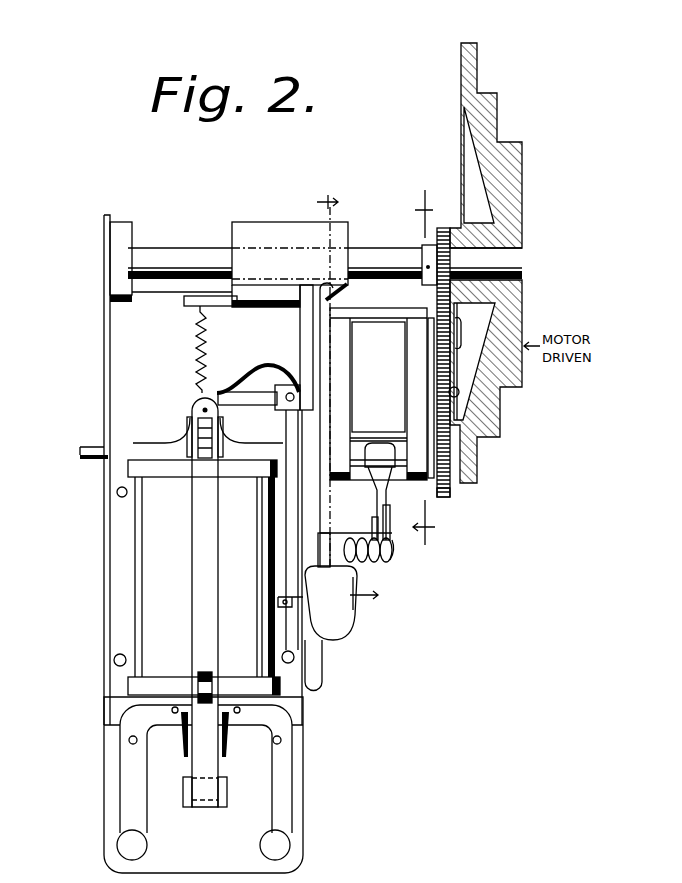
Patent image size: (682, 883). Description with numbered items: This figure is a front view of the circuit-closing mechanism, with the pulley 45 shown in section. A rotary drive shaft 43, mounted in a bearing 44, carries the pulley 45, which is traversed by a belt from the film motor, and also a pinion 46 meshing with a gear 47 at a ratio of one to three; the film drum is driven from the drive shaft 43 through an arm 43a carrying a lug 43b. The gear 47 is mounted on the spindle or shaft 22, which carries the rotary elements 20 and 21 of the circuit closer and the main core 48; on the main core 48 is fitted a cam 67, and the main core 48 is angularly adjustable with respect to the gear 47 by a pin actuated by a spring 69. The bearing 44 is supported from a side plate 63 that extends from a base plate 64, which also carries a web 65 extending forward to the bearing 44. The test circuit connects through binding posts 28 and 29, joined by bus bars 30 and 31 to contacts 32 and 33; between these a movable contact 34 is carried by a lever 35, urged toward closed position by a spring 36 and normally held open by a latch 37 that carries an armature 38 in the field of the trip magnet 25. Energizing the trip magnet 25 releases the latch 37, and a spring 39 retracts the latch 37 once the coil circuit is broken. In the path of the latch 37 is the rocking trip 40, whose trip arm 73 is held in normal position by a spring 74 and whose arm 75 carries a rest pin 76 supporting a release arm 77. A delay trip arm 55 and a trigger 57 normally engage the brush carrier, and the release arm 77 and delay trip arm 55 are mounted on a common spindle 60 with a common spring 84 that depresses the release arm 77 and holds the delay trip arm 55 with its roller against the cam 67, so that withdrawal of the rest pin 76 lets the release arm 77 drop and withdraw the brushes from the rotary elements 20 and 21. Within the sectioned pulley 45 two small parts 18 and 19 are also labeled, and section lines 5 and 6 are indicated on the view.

The section line 5- 5 is at (425, 362).
The section line 6- 6 is at (347, 405).
The lever 18 is at (466, 361).
The latch 19 is at (471, 328).
The rotary element 20 is at (345, 336).
The rotary element 21 is at (417, 320).
The shaft 22 is at (300, 378).
The trip magnet 25 is at (162, 560).
The binding post 28 is at (148, 853).
The binding post 29 is at (262, 850).
The bus bar 30 is at (128, 760).
The bus bar 31 is at (280, 762).
The contact 32 is at (183, 750).
The contact 33 is at (227, 750).
The movable contact 34 is at (190, 806).
The lever 35 is at (214, 614).
The spring 36 is at (198, 673).
The latch 37 is at (207, 447).
The armature 38 is at (183, 441).
The spring 39 is at (198, 322).
The trip 40 is at (290, 372).
The drive shaft 43 is at (372, 256).
The arm 43a is at (104, 338).
The lug 43b is at (82, 457).
The bearing 44 is at (276, 232).
The pulley 45 is at (508, 213).
The pinion 46 is at (443, 228).
The gear 47 is at (448, 492).
The main core 48 is at (368, 315).
The delay trip arm 55 is at (376, 503).
The trigger 57 is at (390, 548).
The spindle 60 is at (362, 560).
The side plate 63 is at (310, 517).
The base plate 64 is at (171, 293).
The web 65 is at (201, 296).
The cam 67 is at (378, 377).
The spring 69 is at (376, 452).
The trip arm 73 is at (222, 393).
The spring 74 is at (262, 368).
The arm 75 is at (288, 577).
The rest pin 76 is at (295, 620).
The release arm 77 is at (331, 628).
The spring 84 is at (352, 562).